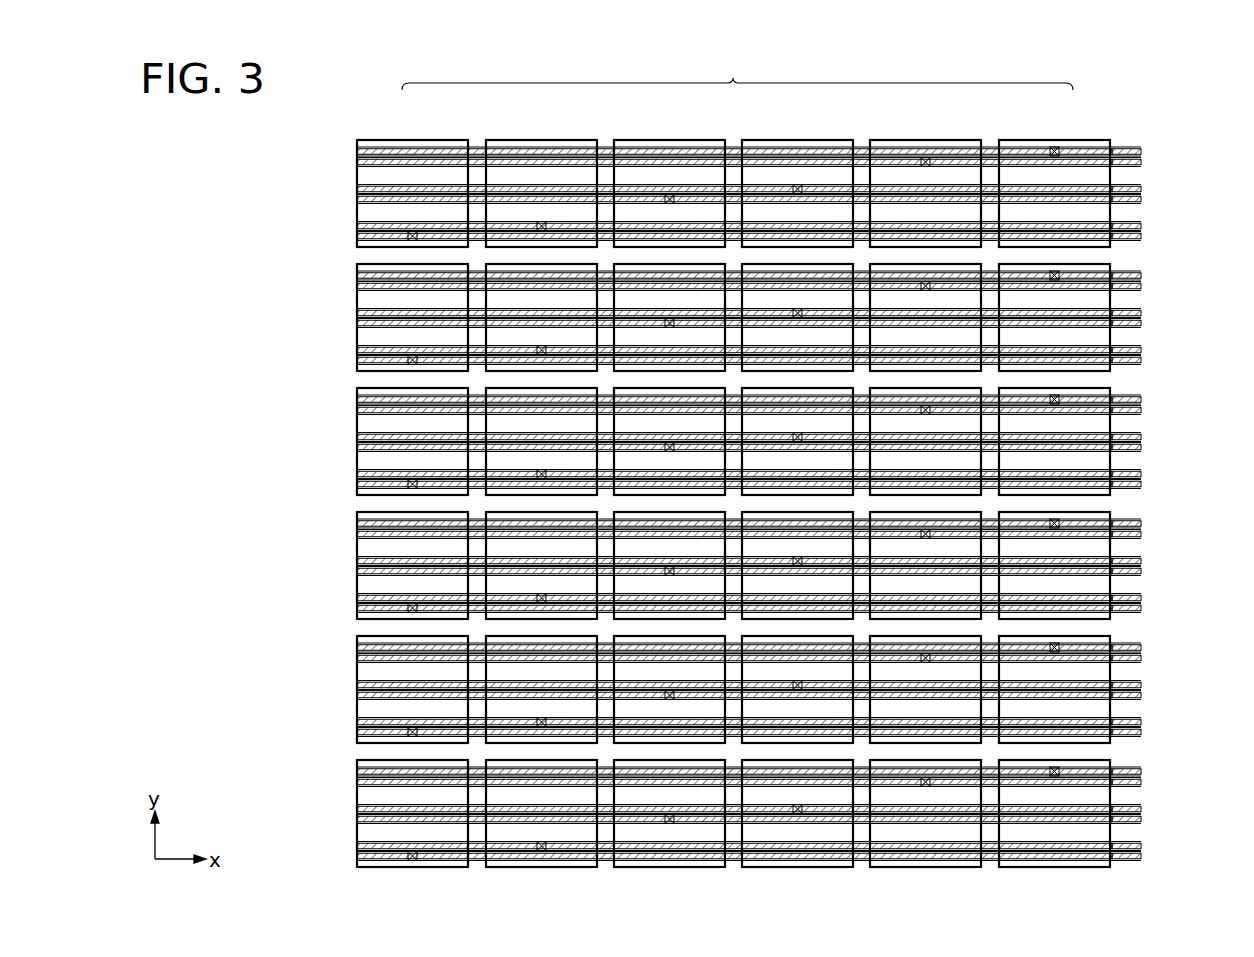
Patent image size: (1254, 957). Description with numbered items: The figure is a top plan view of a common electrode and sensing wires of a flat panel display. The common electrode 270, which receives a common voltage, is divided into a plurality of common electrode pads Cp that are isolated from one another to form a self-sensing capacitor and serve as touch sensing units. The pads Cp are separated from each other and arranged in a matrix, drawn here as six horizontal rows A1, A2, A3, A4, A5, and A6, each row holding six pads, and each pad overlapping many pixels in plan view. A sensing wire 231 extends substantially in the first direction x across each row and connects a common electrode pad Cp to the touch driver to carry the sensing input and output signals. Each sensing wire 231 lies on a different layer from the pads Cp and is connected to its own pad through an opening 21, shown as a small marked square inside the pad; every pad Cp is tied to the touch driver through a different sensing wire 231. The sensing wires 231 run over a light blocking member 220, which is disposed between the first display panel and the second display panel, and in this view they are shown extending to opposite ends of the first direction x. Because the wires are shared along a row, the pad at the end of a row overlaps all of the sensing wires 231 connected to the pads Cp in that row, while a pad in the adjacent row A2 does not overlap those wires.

The common electrode 270 is at (737, 69).
The light blocking member 220 is at (711, 504).
The sensing wire 231 is at (1155, 502).
The opening 21 is at (1059, 152).
The common electrode pad Cp is at (733, 480).
The first row A1 is at (270, 195).
The second row A2 is at (270, 319).
The third row A3 is at (270, 443).
The fourth row A4 is at (270, 567).
The fifth row A5 is at (270, 691).
The sixth row A6 is at (270, 815).